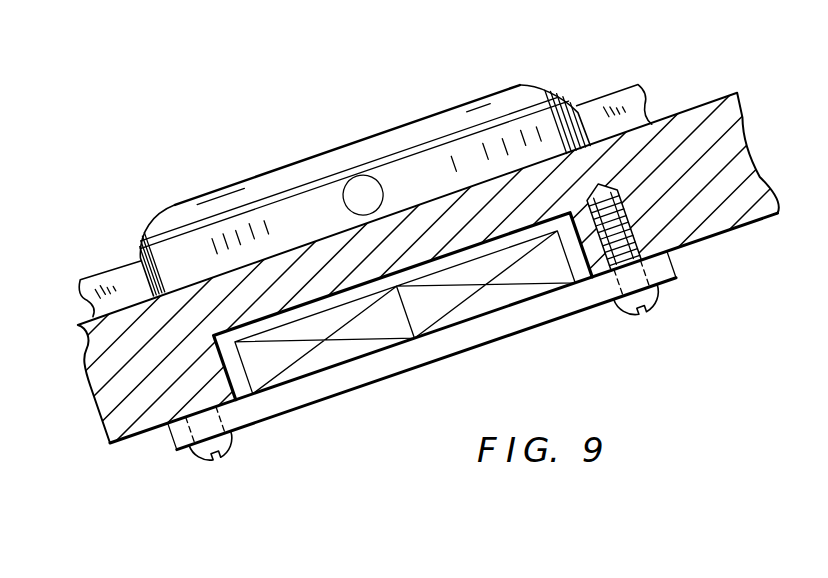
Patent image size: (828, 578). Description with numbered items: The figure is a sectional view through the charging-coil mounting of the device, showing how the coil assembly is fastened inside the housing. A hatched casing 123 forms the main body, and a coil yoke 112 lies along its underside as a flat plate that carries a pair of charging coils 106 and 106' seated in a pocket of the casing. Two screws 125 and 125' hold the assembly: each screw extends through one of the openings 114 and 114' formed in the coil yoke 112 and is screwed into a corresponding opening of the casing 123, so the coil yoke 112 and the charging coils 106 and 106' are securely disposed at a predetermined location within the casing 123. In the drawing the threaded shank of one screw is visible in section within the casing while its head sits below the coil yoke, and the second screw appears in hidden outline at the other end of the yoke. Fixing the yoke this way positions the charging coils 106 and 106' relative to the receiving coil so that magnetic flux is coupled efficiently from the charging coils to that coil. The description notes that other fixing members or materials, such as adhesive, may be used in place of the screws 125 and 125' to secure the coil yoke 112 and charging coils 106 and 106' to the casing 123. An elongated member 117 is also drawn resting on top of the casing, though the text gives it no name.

The casing 123 is at (740, 93).
The guide bar 117 is at (533, 86).
The coil yoke 112 is at (583, 303).
The charging coil 106 is at (403, 325).
The charging coil 106' is at (486, 299).
The opening 114 is at (655, 238).
The screw 125 is at (671, 302).
The opening 114' is at (169, 442).
The screw 125' is at (212, 466).